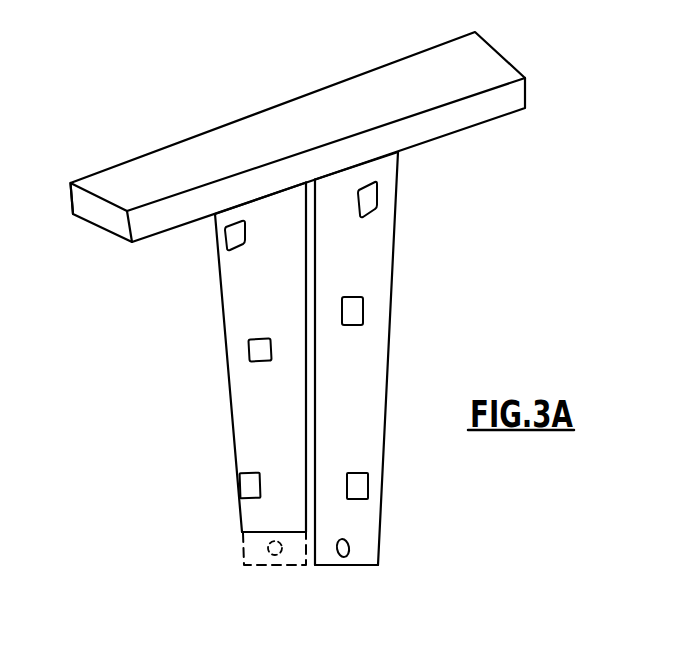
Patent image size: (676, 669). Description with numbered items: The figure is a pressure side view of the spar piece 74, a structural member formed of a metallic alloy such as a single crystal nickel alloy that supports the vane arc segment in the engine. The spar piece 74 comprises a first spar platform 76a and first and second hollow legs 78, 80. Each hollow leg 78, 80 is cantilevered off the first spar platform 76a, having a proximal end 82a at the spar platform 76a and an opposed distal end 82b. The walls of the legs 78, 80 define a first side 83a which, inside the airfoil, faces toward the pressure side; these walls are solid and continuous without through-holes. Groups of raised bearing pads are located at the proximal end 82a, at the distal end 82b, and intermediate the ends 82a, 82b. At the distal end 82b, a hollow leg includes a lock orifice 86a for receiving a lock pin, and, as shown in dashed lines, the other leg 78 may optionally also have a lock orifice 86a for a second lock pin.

The spar piece 74 is at (282, 322).
The first spar platform 76a is at (112, 220).
The first hollow leg 78 is at (252, 392).
The second hollow leg 80 is at (365, 360).
The proximal end 82a is at (200, 238).
The distal end 82b is at (228, 531).
The first side 83a is at (252, 315).
The lock orifice 86a is at (345, 557).